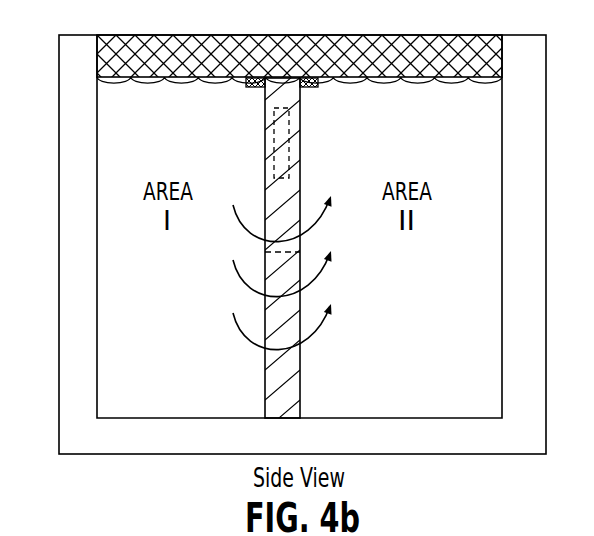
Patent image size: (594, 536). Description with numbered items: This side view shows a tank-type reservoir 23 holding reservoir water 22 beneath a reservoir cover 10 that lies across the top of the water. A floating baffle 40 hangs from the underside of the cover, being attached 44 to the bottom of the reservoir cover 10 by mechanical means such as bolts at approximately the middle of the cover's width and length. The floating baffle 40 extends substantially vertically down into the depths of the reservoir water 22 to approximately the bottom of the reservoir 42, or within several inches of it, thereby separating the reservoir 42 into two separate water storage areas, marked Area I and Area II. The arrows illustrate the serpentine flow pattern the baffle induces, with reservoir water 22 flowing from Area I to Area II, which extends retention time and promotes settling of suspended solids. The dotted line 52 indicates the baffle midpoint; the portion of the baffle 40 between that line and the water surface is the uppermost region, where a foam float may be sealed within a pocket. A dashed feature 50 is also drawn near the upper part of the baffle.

The reservoir cover 10 is at (357, 48).
The reservoir water 22 is at (148, 81).
The reservoir 23 is at (535, 56).
The floating baffle 40 is at (296, 135).
The reservoir 42 is at (353, 418).
The attachment 44 is at (252, 90).
The opening 50 is at (291, 159).
The dotted line indicating baffle midpoint 52 is at (297, 257).